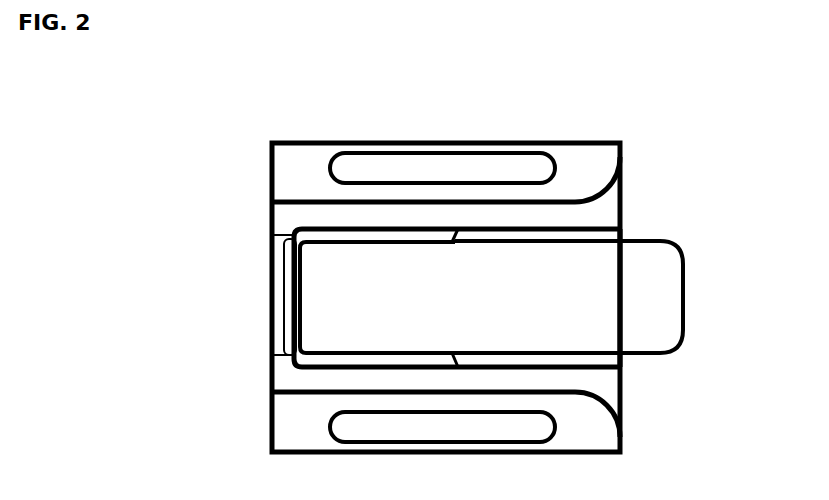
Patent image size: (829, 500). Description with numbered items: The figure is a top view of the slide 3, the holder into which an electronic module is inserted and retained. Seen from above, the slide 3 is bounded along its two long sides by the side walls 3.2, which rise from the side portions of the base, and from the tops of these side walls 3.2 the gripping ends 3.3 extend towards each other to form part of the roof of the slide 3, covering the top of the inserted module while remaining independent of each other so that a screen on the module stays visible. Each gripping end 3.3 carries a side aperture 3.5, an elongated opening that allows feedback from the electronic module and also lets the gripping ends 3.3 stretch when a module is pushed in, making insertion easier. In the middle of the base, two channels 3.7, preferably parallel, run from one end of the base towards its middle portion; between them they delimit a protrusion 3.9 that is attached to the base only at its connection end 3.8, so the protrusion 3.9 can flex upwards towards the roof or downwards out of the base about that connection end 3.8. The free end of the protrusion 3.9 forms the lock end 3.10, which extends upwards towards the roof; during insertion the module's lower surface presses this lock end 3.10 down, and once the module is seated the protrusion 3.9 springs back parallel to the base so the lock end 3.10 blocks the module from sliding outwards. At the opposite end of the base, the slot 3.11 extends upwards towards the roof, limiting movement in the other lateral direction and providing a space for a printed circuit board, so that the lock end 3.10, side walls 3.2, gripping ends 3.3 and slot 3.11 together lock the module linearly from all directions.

The slide 3 is at (277, 102).
The side walls 3.2 is at (565, 143).
The gripping ends 3.3 is at (578, 176).
The side aperture 3.5 is at (421, 167).
The channels 3.7 is at (634, 228).
The connection end 3.8 is at (438, 302).
The protrusion 3.9 is at (558, 309).
The lock end 3.10 is at (683, 303).
The slot 3.11 is at (290, 298).